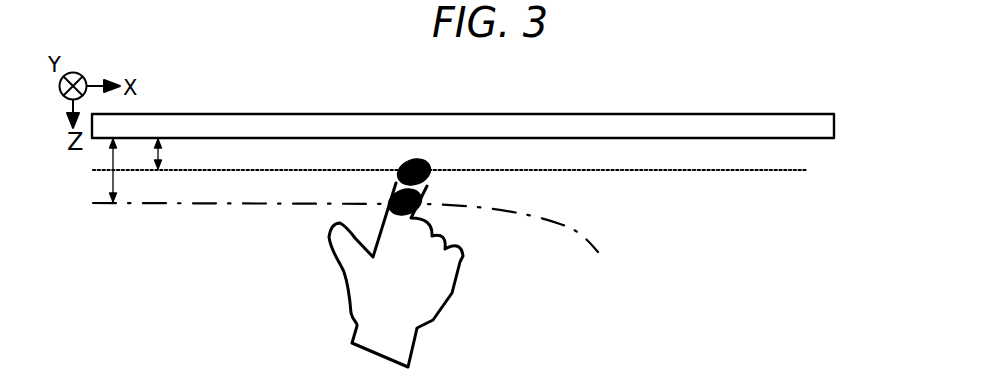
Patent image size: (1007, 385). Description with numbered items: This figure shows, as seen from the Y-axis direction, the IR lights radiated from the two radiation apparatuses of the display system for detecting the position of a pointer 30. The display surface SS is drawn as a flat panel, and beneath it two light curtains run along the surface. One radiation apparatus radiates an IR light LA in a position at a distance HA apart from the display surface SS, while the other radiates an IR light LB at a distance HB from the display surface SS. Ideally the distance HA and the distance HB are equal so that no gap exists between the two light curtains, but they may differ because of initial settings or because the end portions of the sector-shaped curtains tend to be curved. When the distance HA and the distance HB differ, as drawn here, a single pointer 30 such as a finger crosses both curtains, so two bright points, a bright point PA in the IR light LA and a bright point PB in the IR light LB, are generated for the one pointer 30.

The display surface SS is at (835, 121).
The IR light LA is at (810, 170).
The IR light LB is at (599, 252).
The distance HA is at (177, 154).
The distance HB is at (130, 170).
The bright point PA is at (398, 181).
The bright point PB is at (423, 205).
The pointer 30 is at (413, 352).